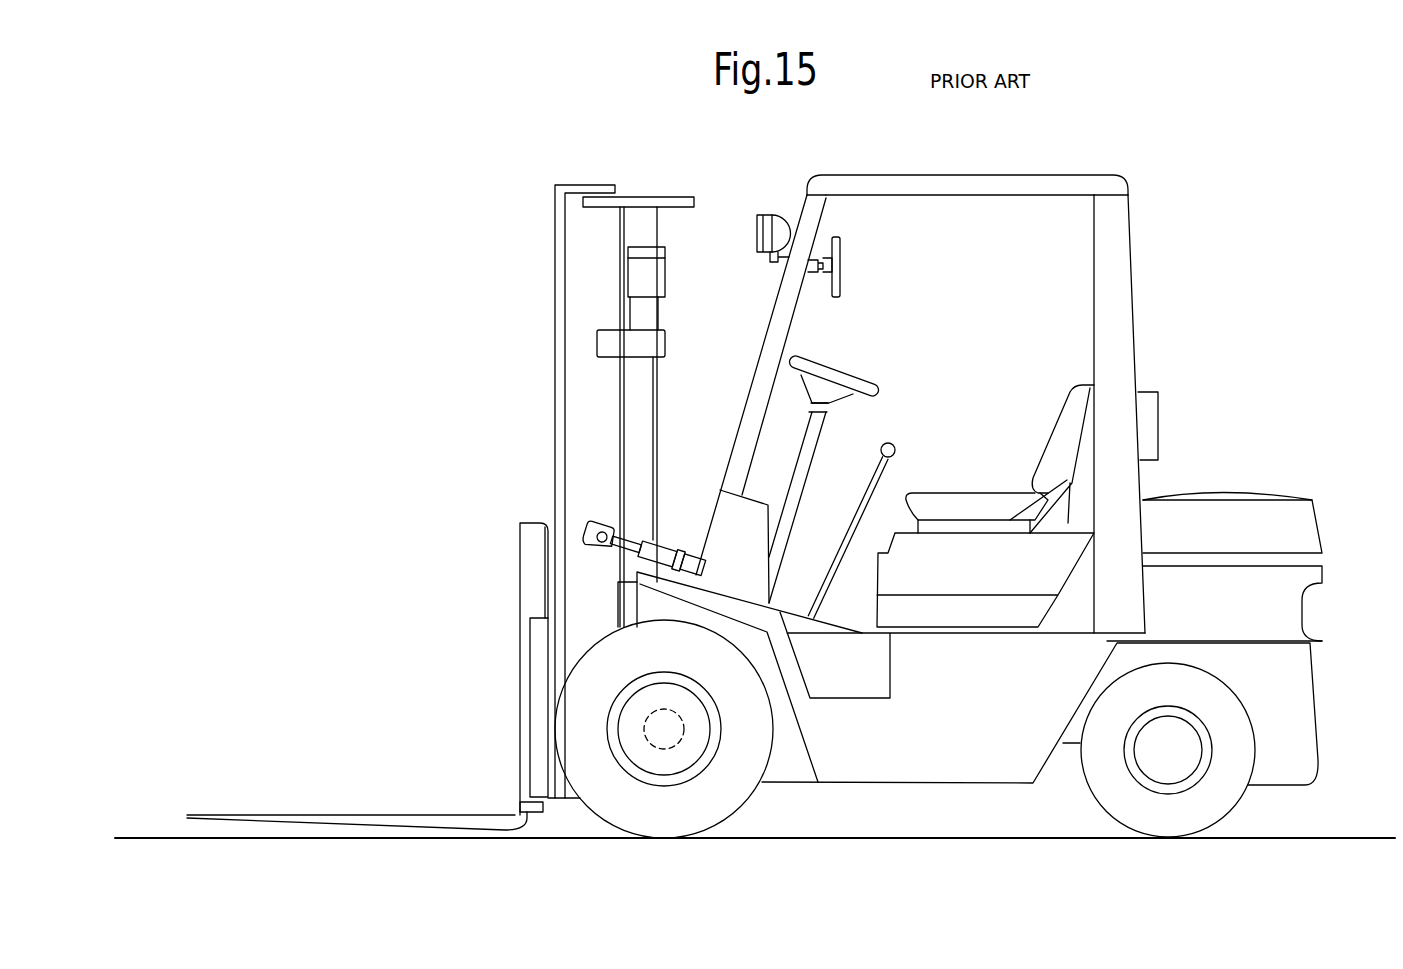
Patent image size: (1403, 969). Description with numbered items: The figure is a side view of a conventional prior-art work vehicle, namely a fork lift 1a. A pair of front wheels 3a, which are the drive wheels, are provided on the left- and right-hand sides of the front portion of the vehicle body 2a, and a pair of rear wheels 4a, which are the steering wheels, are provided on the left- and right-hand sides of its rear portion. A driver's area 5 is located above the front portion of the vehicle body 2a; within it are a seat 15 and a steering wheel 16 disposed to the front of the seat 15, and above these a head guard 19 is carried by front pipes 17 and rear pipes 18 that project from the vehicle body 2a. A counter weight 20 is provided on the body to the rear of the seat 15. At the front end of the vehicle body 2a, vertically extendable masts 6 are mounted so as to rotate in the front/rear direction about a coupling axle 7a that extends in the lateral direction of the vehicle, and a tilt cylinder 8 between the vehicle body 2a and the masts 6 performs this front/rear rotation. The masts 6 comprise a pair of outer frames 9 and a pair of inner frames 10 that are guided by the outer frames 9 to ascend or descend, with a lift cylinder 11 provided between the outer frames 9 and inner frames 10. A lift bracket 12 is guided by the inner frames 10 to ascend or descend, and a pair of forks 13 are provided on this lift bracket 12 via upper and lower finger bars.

The fork lift 1a is at (1198, 410).
The vehicle body 2a is at (835, 773).
The front wheels 3a is at (643, 813).
The rear wheels 4a is at (1153, 810).
The driver's area 5 is at (918, 238).
The masts 6 is at (554, 303).
The coupling axle 7a is at (648, 715).
The tilt cylinder 8 is at (692, 553).
The outer frames 9 is at (592, 447).
The inner frames 10 is at (544, 500).
The lift cylinder 11 is at (640, 397).
The lift bracket 12 is at (541, 640).
The forks 13 is at (432, 813).
The seat 15 is at (988, 500).
The steering wheel 16 is at (855, 388).
The front pipes 17 is at (784, 297).
The rear pipes 18 is at (1103, 290).
The head guard 19 is at (1013, 183).
The counter weight 20 is at (1258, 530).